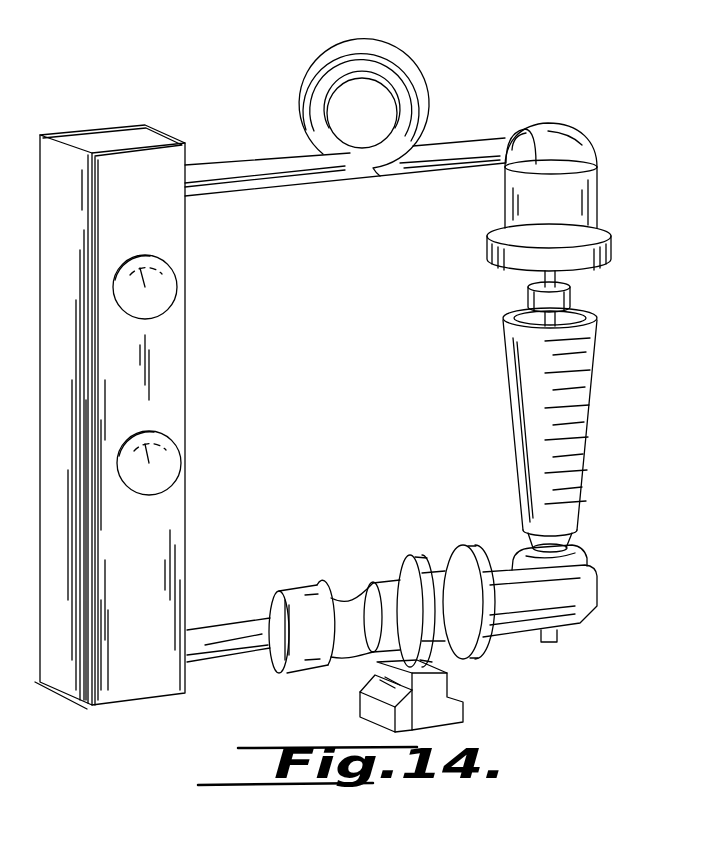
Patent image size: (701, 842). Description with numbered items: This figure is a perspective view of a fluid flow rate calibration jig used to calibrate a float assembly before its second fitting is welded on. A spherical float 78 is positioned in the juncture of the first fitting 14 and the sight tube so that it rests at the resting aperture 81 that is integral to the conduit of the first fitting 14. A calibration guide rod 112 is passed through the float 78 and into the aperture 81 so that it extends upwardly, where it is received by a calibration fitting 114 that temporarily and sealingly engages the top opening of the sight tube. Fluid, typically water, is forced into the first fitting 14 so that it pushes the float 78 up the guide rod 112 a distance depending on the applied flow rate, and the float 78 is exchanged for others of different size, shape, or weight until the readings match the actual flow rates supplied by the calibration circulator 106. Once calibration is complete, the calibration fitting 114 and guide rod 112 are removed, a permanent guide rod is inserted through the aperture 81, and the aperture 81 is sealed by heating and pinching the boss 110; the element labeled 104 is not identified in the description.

The calibration circulator 106 is at (172, 371).
The calibration fitting 114 is at (593, 176).
The spherical float 78 is at (522, 293).
The calibration guide rod 112 is at (537, 324).
The first fitting 14 is at (527, 542).
The socket 104 is at (577, 532).
The boss 110 is at (572, 630).
The resting aperture 81 is at (552, 642).